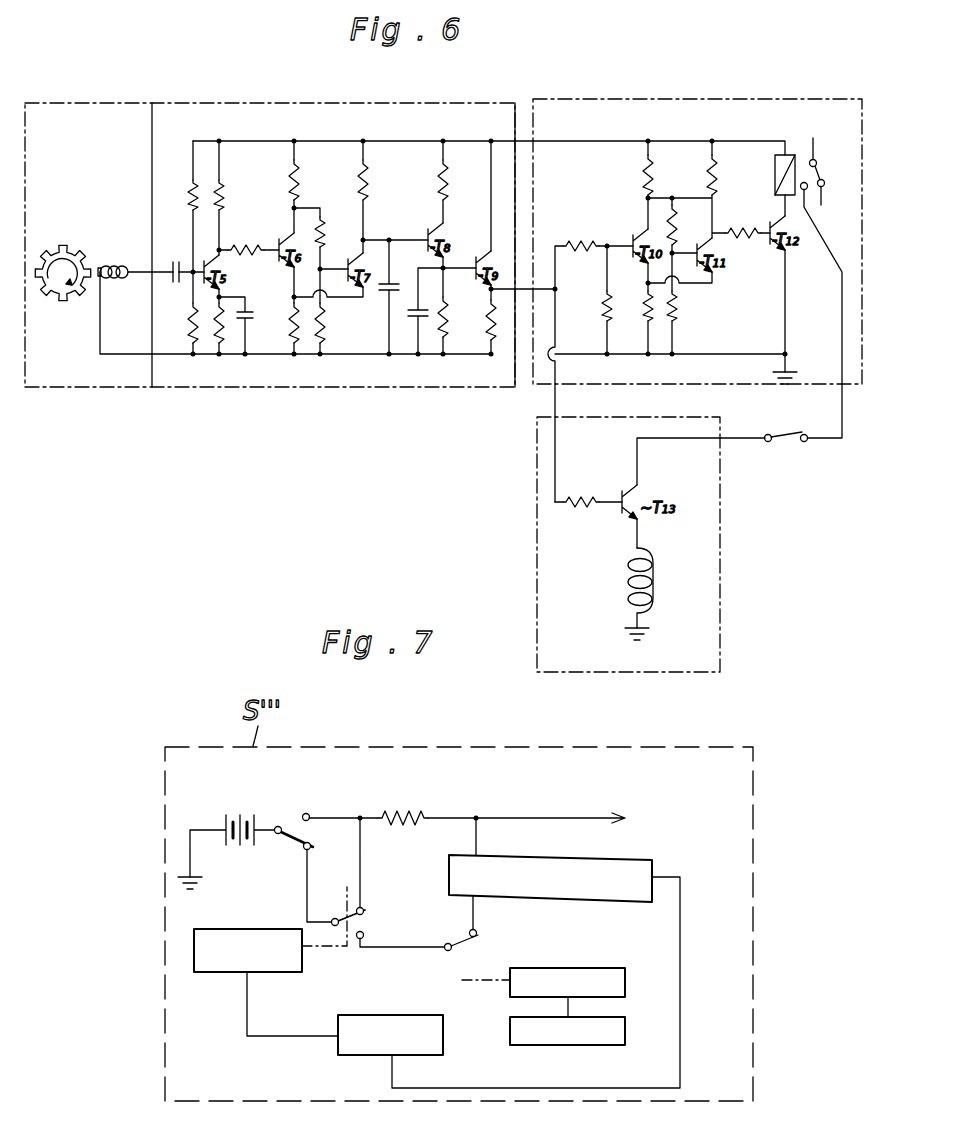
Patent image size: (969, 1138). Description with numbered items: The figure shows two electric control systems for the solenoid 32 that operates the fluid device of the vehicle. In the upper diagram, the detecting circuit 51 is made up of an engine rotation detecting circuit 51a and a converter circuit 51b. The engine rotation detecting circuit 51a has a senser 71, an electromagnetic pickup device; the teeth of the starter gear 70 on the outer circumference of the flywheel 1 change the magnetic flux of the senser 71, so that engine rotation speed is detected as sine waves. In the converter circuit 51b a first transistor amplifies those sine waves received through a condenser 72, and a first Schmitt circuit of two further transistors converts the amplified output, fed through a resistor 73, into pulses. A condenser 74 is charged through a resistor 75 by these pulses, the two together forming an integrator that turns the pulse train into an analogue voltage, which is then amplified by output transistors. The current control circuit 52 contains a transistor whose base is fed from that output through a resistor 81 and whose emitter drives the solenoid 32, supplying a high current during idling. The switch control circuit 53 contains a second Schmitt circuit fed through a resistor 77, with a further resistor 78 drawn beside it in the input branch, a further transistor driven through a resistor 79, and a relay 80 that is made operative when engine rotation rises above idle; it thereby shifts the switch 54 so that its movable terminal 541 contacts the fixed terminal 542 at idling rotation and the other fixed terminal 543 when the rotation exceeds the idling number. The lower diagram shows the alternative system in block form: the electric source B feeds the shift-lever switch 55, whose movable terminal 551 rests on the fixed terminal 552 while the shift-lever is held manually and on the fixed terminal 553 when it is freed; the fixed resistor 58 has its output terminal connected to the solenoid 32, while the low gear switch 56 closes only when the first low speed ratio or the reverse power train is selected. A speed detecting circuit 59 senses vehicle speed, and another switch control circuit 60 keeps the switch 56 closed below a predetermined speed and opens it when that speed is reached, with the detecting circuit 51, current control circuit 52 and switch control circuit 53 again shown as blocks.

In FIG. 6, the flywheel 1 is at (73, 297).
In FIG. 6, the starter gear 70 is at (82, 258).
In FIG. 6, the senser 71 is at (114, 262).
In FIG. 6, the condenser 72 is at (174, 287).
In FIG. 6, the resistor 73 is at (238, 252).
In FIG. 6, the condenser 74 is at (382, 294).
In FIG. 6, the resistor 75 is at (362, 192).
In FIG. 6, the resistor 77 is at (596, 248).
In FIG. 6, the resistor 78 is at (604, 297).
In FIG. 6, the resistor 79 is at (752, 236).
In FIG. 6, the relay 80 is at (771, 158).
In FIG. 6, the resistor 81 is at (578, 514).
In FIG. 6, the solenoid 32 is at (656, 578).
In FIG. 6, the detecting circuit 51 is at (257, 388).
In FIG. 7, the detecting circuit 51 is at (437, 1044).
In FIG. 6, the engine rotation detecting circuit 51a is at (80, 388).
In FIG. 6, the converter circuit 51b is at (412, 388).
In FIG. 6, the current control circuit 52 is at (713, 580).
In FIG. 7, the current control circuit 52 is at (630, 867).
In FIG. 6, the switch control circuit 53 is at (608, 111).
In FIG. 7, the switch control circuit 53 is at (270, 966).
In FIG. 6, the switch 54 is at (835, 283).
In FIG. 7, the switch 54 is at (359, 935).
In FIG. 6, the movable terminal 541 is at (834, 171).
In FIG. 7, the movable terminal 541 is at (351, 928).
In FIG. 6, the fixed terminal 542 is at (838, 191).
In FIG. 7, the fixed terminal 542 is at (364, 910).
In FIG. 6, the fixed terminal 543 is at (835, 209).
In FIG. 7, the fixed terminal 543 is at (364, 933).
In FIG. 7, the shift-lever switch 55 is at (301, 831).
In FIG. 7, the movable terminal 551 is at (288, 841).
In FIG. 7, the fixed terminal 552 is at (309, 813).
In FIG. 7, the fixed terminal 553 is at (311, 850).
In FIG. 6, the low gear switch 56 is at (786, 441).
In FIG. 7, the low gear switch 56 is at (470, 954).
In FIG. 7, the fixed resistor 58 is at (418, 810).
In FIG. 7, the speed detecting circuit 59 is at (626, 1034).
In FIG. 7, the switch control circuit 60 is at (624, 988).
In FIG. 7, the electric source B is at (223, 814).